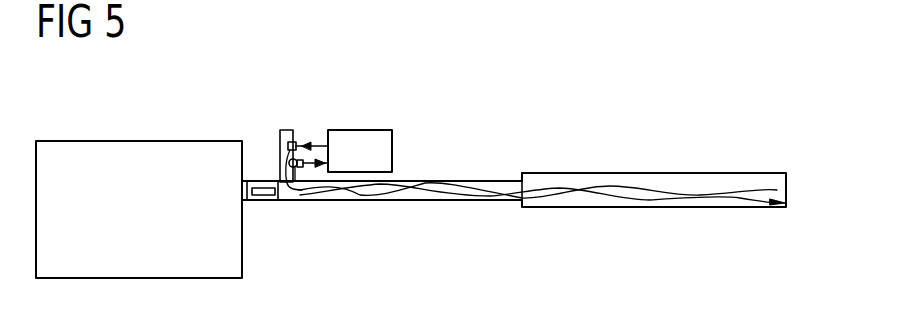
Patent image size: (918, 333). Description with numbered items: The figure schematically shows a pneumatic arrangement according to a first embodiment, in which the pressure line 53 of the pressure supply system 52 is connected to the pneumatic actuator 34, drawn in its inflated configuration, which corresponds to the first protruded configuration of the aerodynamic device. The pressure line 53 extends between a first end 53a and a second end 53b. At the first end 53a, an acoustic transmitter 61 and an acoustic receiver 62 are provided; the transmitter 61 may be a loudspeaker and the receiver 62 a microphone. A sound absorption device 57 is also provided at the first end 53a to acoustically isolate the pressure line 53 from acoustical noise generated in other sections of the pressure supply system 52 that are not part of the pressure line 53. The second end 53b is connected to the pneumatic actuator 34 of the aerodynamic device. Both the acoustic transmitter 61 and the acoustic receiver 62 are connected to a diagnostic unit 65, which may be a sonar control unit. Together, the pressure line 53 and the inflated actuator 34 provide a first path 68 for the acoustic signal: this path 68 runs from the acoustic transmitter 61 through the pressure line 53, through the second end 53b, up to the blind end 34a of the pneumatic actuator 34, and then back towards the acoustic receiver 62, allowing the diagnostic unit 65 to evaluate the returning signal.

The pneumatic actuator 34 is at (652, 172).
The blind end 34a is at (787, 181).
The pressure supply system 52 is at (136, 132).
The pressure line 53 is at (407, 203).
The first end 53a is at (288, 202).
The second end 53b is at (522, 203).
The sound absorption device 57 is at (266, 203).
The acoustic transmitter 61 is at (281, 135).
The acoustic receiver 62 is at (297, 168).
The diagnostic unit 65 is at (357, 130).
The first path 68 is at (508, 184).